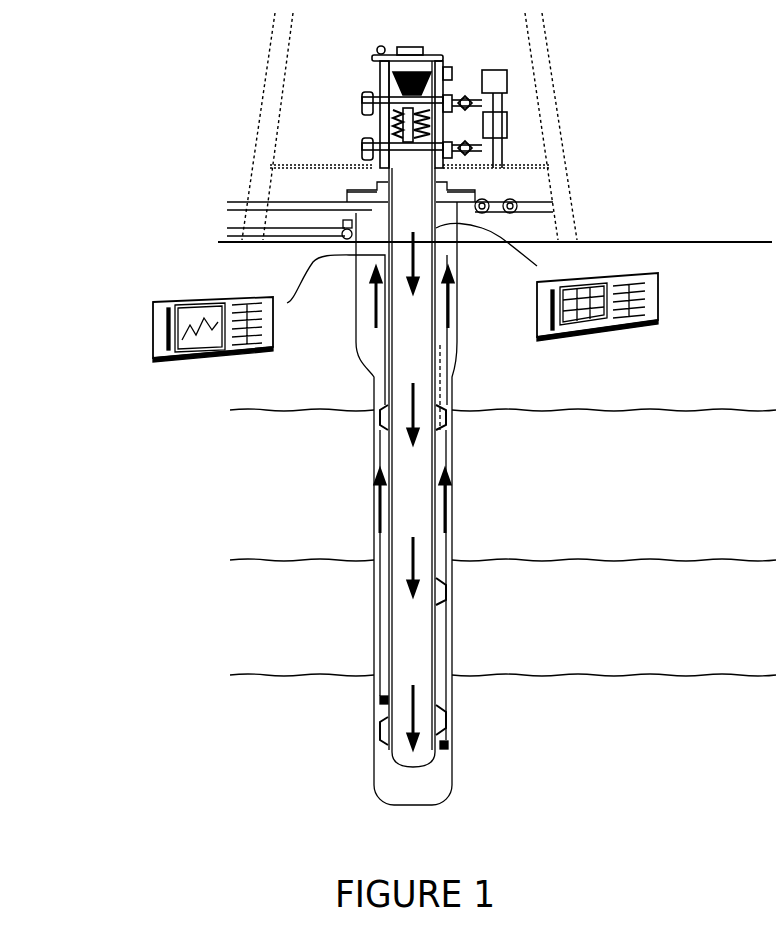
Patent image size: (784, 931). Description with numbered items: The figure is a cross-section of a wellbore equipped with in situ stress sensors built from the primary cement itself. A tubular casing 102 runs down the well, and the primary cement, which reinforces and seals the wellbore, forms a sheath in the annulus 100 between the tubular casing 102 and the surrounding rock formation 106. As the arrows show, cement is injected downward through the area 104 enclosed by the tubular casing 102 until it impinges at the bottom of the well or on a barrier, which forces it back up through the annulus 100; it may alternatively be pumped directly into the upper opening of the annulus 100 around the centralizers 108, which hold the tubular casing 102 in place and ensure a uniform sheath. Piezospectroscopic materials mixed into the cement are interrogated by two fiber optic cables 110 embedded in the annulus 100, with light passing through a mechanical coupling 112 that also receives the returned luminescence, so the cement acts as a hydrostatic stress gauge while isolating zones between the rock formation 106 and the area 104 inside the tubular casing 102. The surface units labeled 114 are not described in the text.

The annulus 100 is at (446, 556).
The tubular casing 102 is at (431, 462).
The area enclosed by the tubular casing 104 is at (407, 625).
The rock formation 106 is at (463, 677).
The centralizers 108 is at (380, 418).
The fiber optics 110 is at (287, 302).
The mechanical coupling 112 is at (381, 699).
The surface control / display unit 114 is at (157, 333).